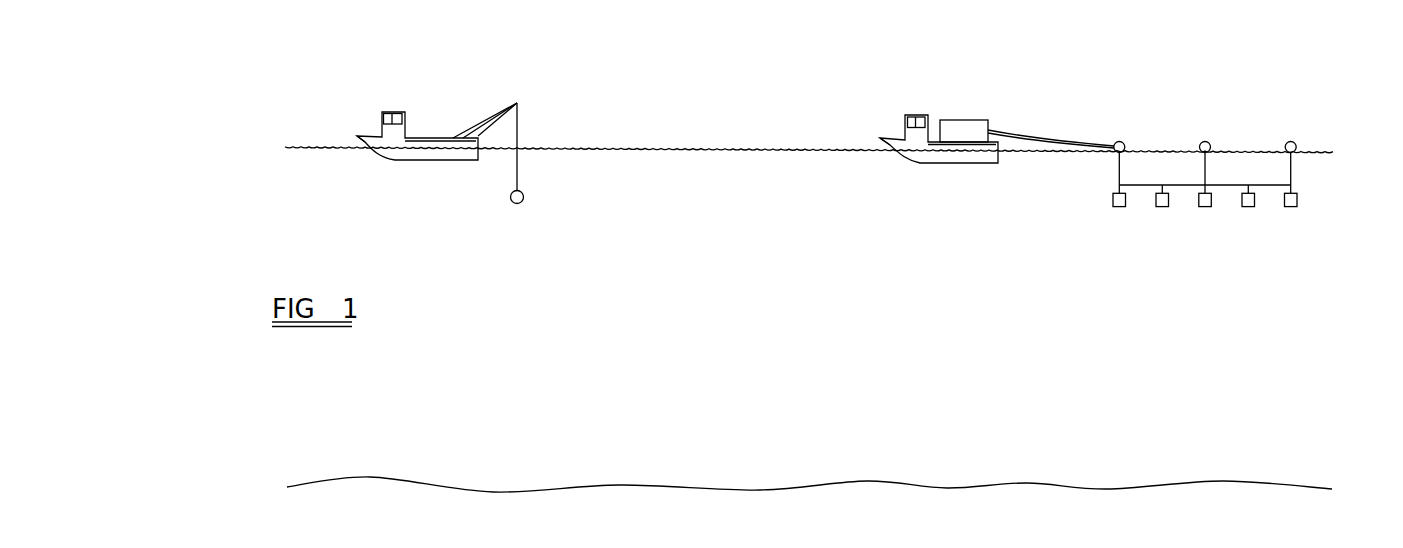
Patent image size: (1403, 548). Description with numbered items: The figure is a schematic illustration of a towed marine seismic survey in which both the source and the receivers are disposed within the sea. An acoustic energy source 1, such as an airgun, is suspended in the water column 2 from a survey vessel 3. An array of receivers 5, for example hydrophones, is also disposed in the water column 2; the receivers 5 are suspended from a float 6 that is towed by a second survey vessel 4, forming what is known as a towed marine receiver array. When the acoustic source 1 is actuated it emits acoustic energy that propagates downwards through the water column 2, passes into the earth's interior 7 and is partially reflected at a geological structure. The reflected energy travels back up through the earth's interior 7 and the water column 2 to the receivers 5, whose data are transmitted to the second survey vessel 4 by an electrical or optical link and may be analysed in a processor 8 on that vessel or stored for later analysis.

The acoustic energy source 1 is at (524, 200).
The water column 2 is at (809, 232).
The survey vessel 3 is at (382, 121).
The second survey vessel 4 is at (905, 125).
The receivers 5 is at (1205, 207).
The float 6 is at (1121, 142).
The earth's interior 7 is at (809, 504).
The processor 8 is at (965, 120).